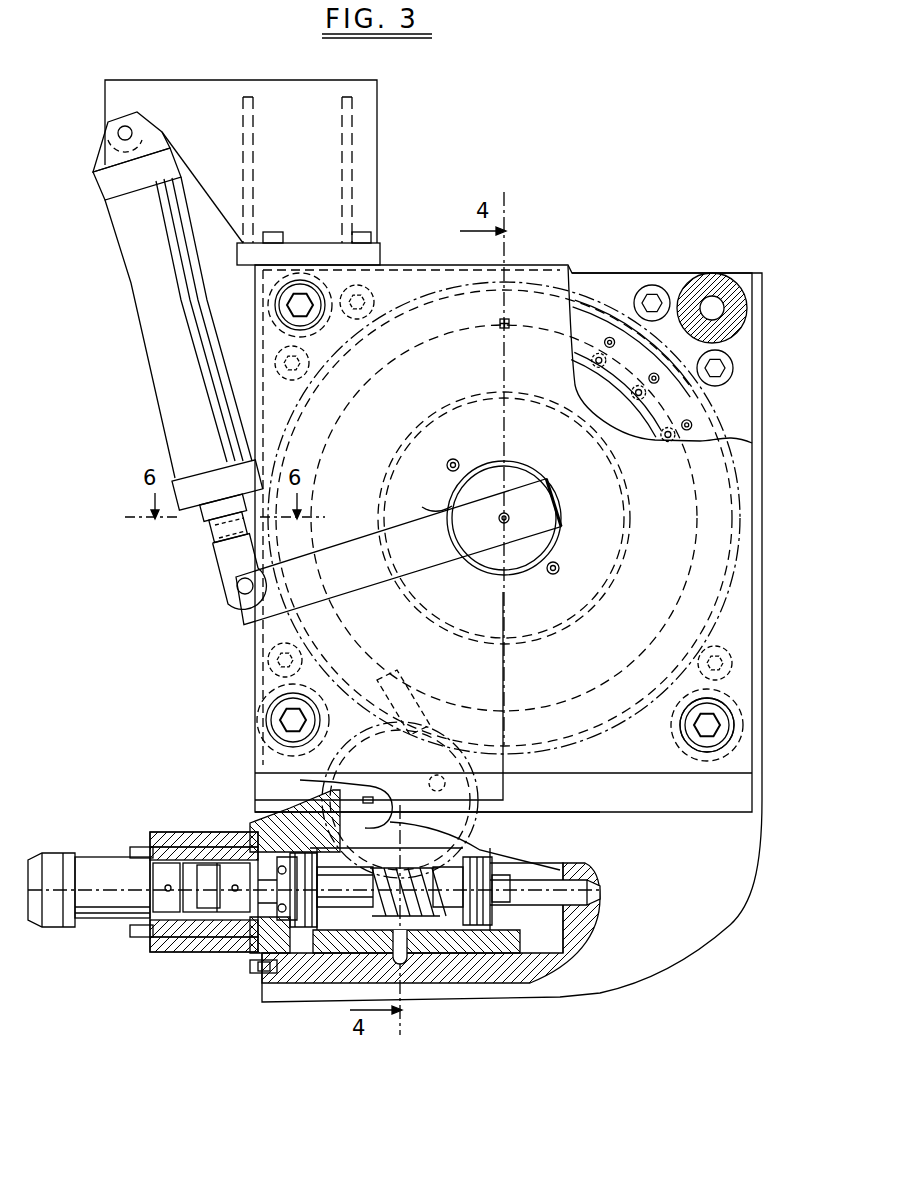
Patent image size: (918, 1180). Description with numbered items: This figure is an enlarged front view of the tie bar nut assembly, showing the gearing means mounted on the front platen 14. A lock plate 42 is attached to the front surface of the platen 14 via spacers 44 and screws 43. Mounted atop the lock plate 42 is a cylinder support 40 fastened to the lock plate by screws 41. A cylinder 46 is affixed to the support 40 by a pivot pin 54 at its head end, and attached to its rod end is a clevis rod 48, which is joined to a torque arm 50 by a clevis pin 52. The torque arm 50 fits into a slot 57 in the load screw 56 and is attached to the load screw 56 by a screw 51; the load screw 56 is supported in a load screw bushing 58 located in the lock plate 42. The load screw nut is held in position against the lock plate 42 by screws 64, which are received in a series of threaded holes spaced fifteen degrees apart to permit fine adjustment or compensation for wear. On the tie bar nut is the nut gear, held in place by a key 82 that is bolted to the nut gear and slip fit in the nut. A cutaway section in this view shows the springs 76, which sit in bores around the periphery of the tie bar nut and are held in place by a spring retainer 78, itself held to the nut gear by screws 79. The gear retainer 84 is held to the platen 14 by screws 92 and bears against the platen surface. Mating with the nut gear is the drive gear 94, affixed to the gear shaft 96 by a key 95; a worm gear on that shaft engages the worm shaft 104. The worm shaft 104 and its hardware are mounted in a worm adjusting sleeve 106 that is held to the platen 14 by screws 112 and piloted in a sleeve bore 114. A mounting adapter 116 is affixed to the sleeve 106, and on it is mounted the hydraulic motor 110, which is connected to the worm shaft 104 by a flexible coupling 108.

The front platen 14 is at (684, 948).
The cylinder support 40 is at (222, 86).
The screws 41 is at (360, 237).
The lock plate 42 is at (250, 655).
The screws 43 is at (690, 735).
The spacers 44 is at (712, 292).
The cylinder 46 is at (138, 289).
The clevis rod 48 is at (228, 572).
The torque arm 50 is at (248, 625).
The screw 51 is at (496, 522).
The clevis pin 52 is at (238, 590).
The pivot pin 54 is at (117, 132).
The load screw 56 is at (522, 480).
The slot 57 is at (436, 508).
The load screw bushing 58 is at (480, 574).
The screws 64 is at (554, 575).
The springs 76 is at (575, 350).
The spring retainer 78 is at (590, 335).
The screws 79 is at (612, 338).
The key 82 is at (509, 318).
The gear retainer 84 is at (578, 276).
The screws 92 is at (416, 272).
The drive gear 94 is at (400, 774).
The key 95 is at (363, 800).
The gear shaft 96 is at (390, 822).
The worm shaft 104 is at (352, 960).
The worm adjusting sleeve 106 is at (320, 950).
The flexible coupling 108 is at (198, 912).
The hydraulic motor 110 is at (96, 866).
The screws 112 is at (252, 975).
The sleeve bore 114 is at (340, 955).
The mounting adapter 116 is at (184, 834).